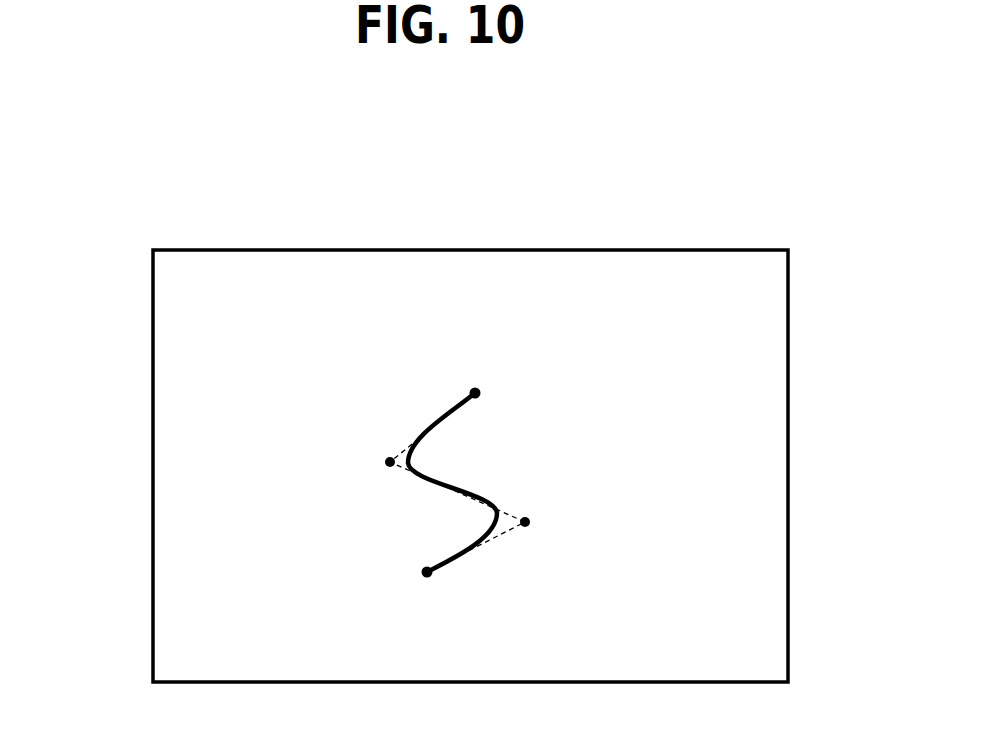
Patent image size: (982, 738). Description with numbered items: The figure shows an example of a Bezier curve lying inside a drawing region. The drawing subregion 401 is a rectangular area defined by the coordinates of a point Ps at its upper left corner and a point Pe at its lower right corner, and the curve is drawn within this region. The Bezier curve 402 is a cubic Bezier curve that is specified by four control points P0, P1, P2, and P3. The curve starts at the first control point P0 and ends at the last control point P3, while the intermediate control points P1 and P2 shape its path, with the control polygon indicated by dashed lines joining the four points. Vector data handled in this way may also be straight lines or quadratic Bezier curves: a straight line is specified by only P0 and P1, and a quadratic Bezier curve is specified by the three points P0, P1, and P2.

The drawing subregion 401 is at (473, 250).
The Bezier curve 402 is at (442, 472).
The control point P0 is at (490, 377).
The control point P1 is at (312, 449).
The control point P2 is at (587, 529).
The control point P3 is at (366, 598).